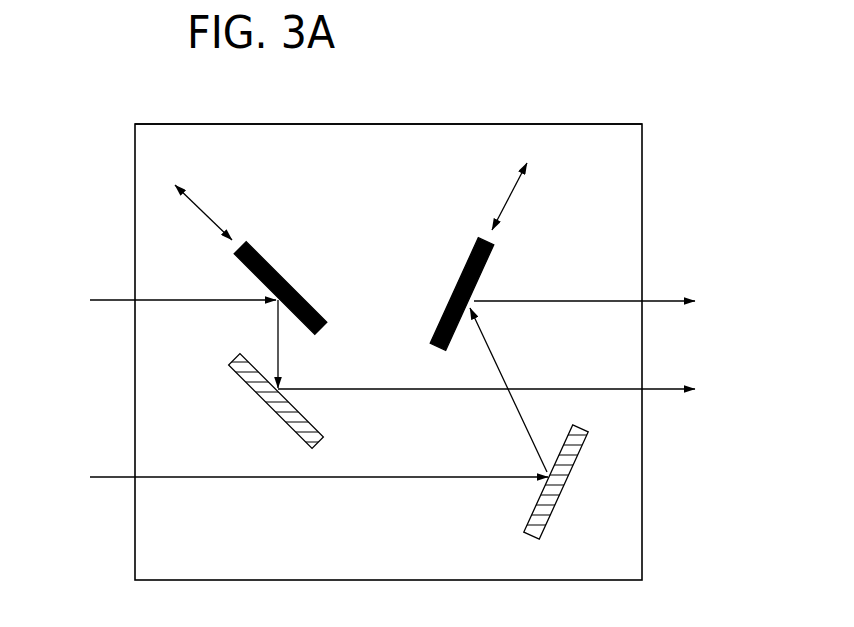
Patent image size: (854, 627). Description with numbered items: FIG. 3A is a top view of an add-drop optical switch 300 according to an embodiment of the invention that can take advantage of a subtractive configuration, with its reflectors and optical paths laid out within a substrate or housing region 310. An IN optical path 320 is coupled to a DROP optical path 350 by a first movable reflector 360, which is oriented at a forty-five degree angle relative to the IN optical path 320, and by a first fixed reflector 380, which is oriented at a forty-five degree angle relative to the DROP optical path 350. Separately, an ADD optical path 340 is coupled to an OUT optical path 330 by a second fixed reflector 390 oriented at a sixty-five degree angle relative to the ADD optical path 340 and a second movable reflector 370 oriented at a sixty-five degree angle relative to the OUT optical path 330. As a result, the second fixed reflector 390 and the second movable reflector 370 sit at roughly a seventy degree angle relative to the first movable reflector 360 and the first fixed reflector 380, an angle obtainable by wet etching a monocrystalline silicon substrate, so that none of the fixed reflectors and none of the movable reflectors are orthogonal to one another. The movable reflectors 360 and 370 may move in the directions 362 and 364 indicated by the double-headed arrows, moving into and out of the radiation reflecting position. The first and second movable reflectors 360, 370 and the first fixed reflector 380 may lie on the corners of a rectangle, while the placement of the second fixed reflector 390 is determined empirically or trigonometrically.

The optical add/drop multiplexer 300 is at (683, 140).
The housing / enclosure 310 is at (502, 123).
The IN optical path 320 is at (118, 298).
The OUT optical path 330 is at (563, 300).
The ADD optical path 340 is at (120, 477).
The DROP optical path 350 is at (545, 387).
The first movable reflector 360 is at (278, 273).
The direction 362 is at (200, 203).
The direction 364 is at (510, 195).
The second movable reflector 370 is at (460, 278).
The first fixed reflector 380 is at (310, 422).
The second fixed reflector 390 is at (532, 508).